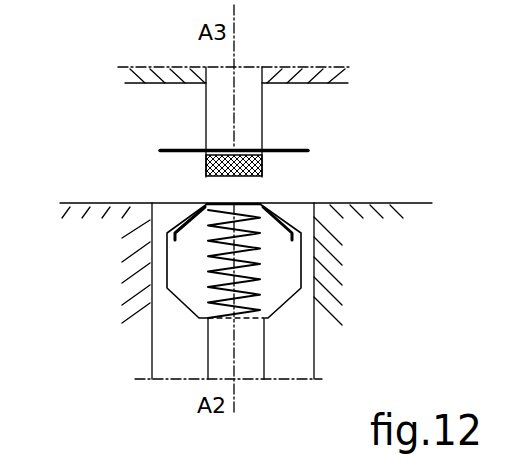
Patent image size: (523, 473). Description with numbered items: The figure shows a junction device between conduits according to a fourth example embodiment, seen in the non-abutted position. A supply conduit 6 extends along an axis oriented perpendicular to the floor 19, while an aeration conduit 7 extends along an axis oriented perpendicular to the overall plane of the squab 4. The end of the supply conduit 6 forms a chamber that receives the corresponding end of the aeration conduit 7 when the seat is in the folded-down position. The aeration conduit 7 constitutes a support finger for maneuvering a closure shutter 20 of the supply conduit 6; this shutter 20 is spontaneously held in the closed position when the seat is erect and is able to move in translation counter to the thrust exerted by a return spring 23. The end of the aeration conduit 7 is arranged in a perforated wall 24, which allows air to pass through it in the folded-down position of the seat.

The squab 4 is at (313, 84).
The aeration conduit 7 is at (206, 108).
The perforated wall 24 is at (262, 162).
The floor 19 is at (388, 203).
The closure shutter 20 is at (179, 229).
The return spring 23 is at (257, 274).
The supply conduit 6 is at (264, 355).